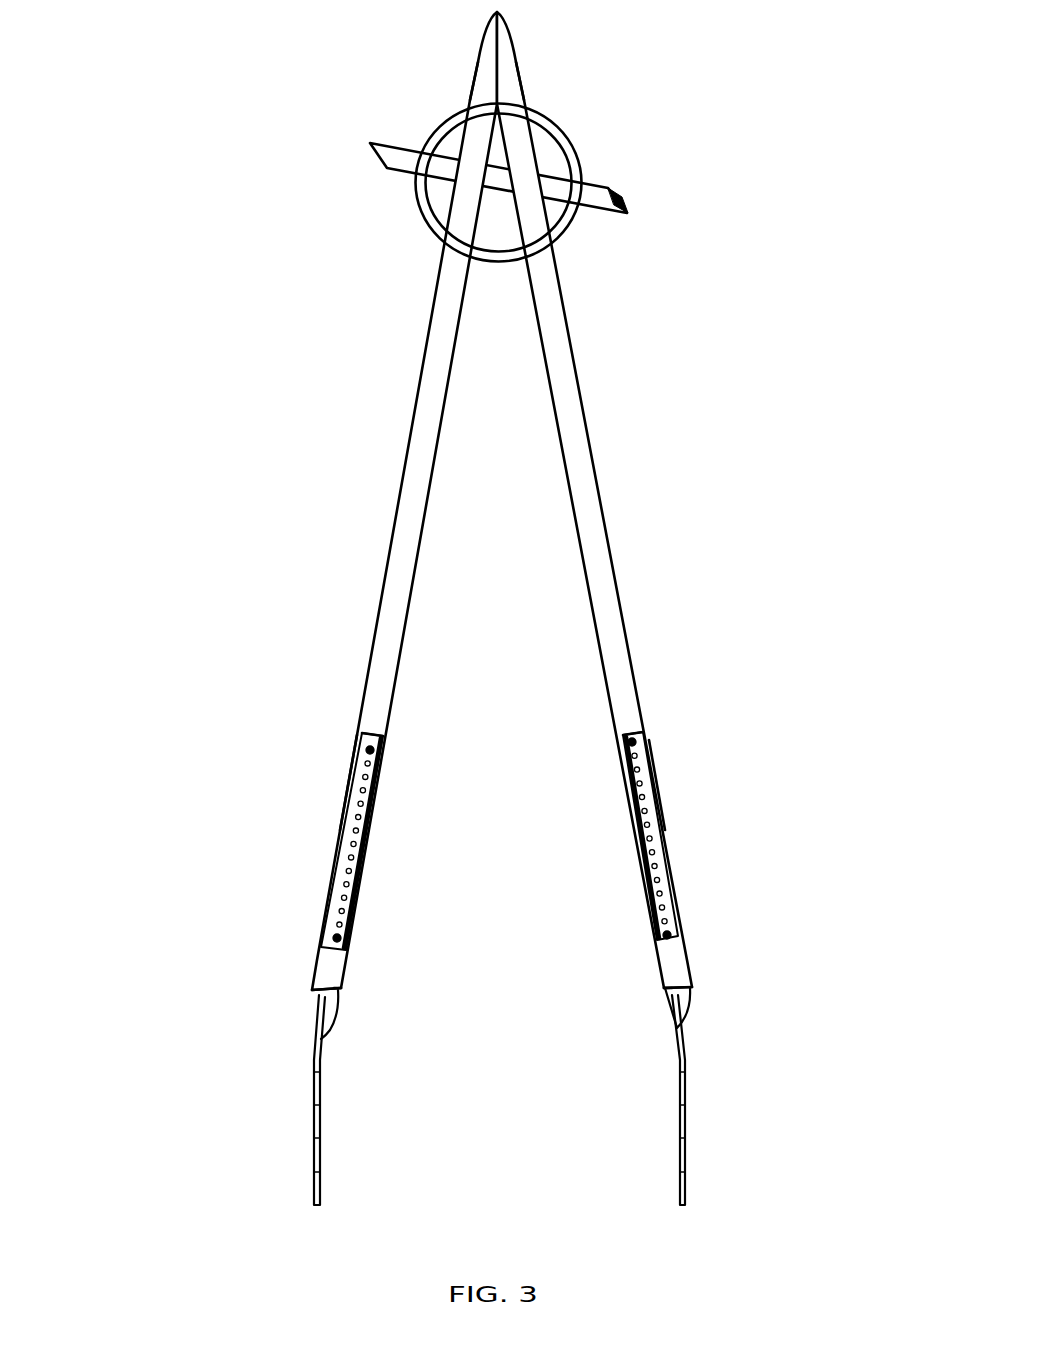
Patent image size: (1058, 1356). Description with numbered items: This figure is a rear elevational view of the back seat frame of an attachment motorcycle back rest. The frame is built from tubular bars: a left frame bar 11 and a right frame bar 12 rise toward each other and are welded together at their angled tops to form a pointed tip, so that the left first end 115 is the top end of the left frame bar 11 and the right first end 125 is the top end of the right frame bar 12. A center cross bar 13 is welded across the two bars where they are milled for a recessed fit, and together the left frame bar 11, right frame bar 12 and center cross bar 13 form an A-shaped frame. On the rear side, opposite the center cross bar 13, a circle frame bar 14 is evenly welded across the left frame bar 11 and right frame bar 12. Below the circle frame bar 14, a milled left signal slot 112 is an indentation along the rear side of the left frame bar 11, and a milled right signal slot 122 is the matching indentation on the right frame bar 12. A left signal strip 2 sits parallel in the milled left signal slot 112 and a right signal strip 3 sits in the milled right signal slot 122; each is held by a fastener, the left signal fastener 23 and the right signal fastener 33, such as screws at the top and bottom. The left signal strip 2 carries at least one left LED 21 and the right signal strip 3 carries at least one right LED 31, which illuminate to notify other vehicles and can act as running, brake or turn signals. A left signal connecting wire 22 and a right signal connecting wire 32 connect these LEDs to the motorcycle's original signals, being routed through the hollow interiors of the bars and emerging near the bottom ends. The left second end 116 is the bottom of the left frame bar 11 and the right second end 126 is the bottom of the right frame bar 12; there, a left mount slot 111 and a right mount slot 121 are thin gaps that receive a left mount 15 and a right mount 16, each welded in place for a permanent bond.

The left frame bar 11 is at (428, 373).
The right frame bar 12 is at (583, 472).
The center cross bar 13 is at (627, 211).
The circle frame bar 14 is at (416, 193).
The left first end 115 is at (488, 62).
The right first end 125 is at (506, 62).
The left signal strip 2 is at (323, 818).
The left LED 21 is at (355, 779).
The left signal fastener 23 is at (363, 733).
The left signal connecting wire 22 is at (370, 993).
The right signal strip 3 is at (671, 808).
The right LED 31 is at (645, 773).
The right signal fastener 33 is at (640, 733).
The right signal connecting wire 32 is at (623, 980).
The milled left signal slot 112 is at (343, 827).
The milled right signal slot 122 is at (655, 803).
The left second end 116 is at (320, 1010).
The right second end 126 is at (683, 997).
The left mount slot 111 is at (320, 1010).
The right mount slot 121 is at (688, 1012).
The left mount 15 is at (313, 1100).
The right mount 16 is at (685, 1108).